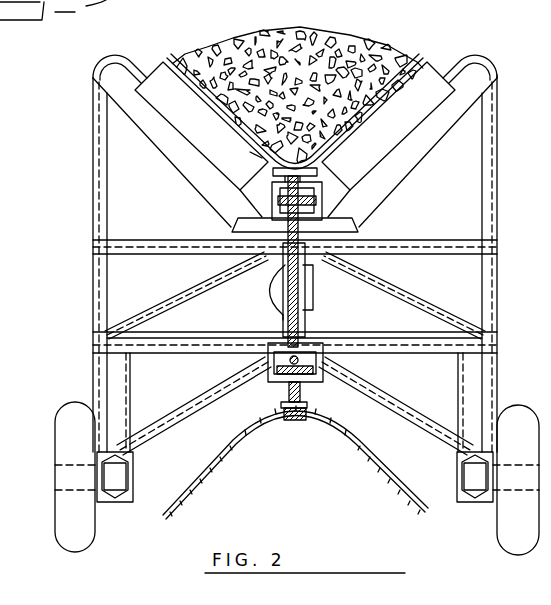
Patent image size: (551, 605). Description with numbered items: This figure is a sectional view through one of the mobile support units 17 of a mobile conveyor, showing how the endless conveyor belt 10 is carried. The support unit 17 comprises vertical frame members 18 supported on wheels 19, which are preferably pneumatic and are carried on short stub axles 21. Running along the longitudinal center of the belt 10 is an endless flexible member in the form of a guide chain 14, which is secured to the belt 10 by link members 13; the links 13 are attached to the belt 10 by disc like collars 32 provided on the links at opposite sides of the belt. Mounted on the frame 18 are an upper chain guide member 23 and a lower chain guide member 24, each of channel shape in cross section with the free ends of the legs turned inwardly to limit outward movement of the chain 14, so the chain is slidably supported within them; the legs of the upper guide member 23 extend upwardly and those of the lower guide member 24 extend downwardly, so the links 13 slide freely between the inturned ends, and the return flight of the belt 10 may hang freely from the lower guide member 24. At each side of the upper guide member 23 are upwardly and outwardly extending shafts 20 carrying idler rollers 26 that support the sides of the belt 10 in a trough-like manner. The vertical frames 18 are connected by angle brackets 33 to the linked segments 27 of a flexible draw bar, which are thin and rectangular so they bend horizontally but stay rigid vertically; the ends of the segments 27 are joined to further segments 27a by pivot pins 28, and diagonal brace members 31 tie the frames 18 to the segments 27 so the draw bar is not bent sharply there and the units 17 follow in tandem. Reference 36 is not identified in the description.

The endless conveyor belt 10 is at (416, 66).
The link members 13 is at (280, 188).
The guide chain 14 is at (317, 198).
The mobile support units 17 is at (84, 254).
The vertical frame members 18 is at (95, 164).
The wheels 19 is at (60, 427).
The shafts 20 is at (140, 68).
The stub axles 21 is at (140, 470).
The upper chain guide member 23 is at (356, 150).
The lower chain guide member 24 is at (260, 386).
The idler rollers 26 is at (193, 137).
The linked segments 27 is at (300, 283).
The segments 27a is at (283, 293).
The pivot pins 28 is at (270, 265).
The diagonal brace members 31 is at (198, 326).
The disc like collars 32 is at (250, 152).
The angle brackets 33 is at (268, 240).
The rock load 36 is at (296, 30).